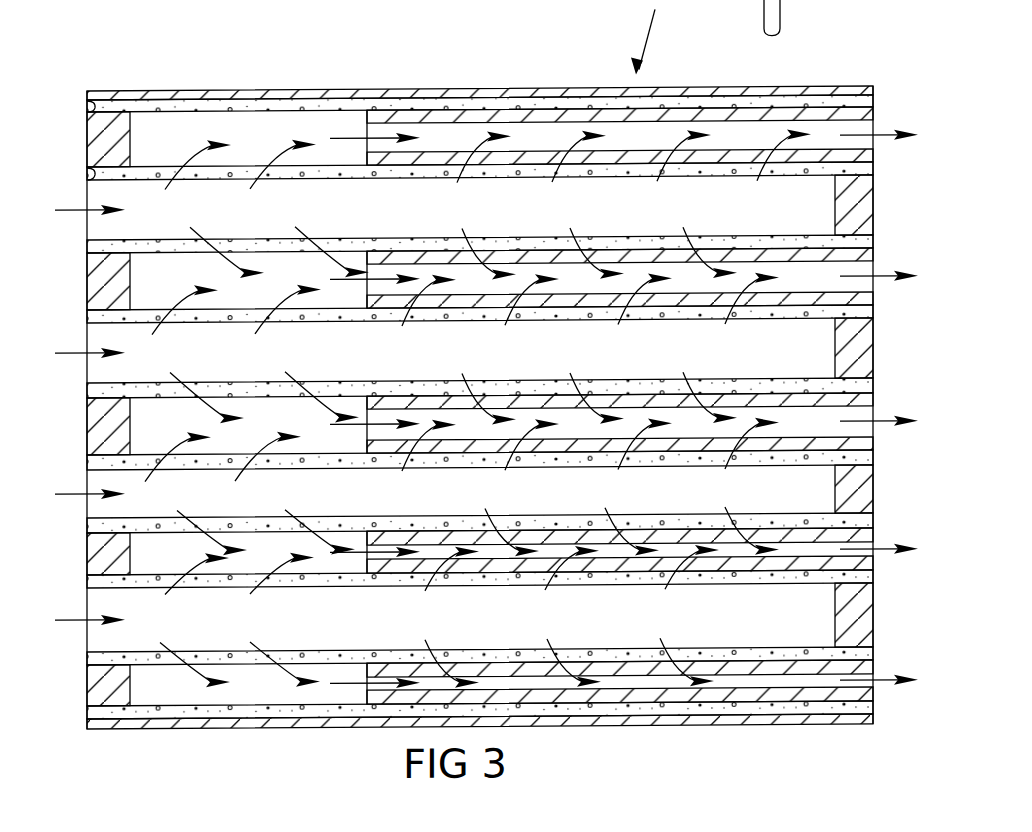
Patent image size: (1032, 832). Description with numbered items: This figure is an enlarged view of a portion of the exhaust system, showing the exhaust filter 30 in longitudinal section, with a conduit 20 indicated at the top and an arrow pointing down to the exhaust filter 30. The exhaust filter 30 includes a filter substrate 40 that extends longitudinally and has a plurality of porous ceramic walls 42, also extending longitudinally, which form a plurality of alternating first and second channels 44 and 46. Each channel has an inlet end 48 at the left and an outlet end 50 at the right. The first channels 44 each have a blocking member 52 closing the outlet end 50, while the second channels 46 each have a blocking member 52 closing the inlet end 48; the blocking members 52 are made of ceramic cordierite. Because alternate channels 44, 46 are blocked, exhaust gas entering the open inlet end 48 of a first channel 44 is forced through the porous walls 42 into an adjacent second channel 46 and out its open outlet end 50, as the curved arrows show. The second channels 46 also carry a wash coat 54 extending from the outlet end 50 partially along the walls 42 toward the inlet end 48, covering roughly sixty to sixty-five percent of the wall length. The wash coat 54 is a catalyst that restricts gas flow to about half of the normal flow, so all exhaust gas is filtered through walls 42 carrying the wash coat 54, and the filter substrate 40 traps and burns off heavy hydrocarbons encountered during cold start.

The conduit 20 is at (782, 22).
The exhaust filter 30 is at (654, 37).
The filter substrate 40 is at (287, 97).
The walls 42 is at (383, 175).
The first channels 44 is at (140, 207).
The second channels 46 is at (200, 139).
The inlet end 48 is at (87, 185).
The outlet end 50 is at (874, 183).
The blocking member 52 is at (840, 212).
The wash coat 54 is at (553, 178).